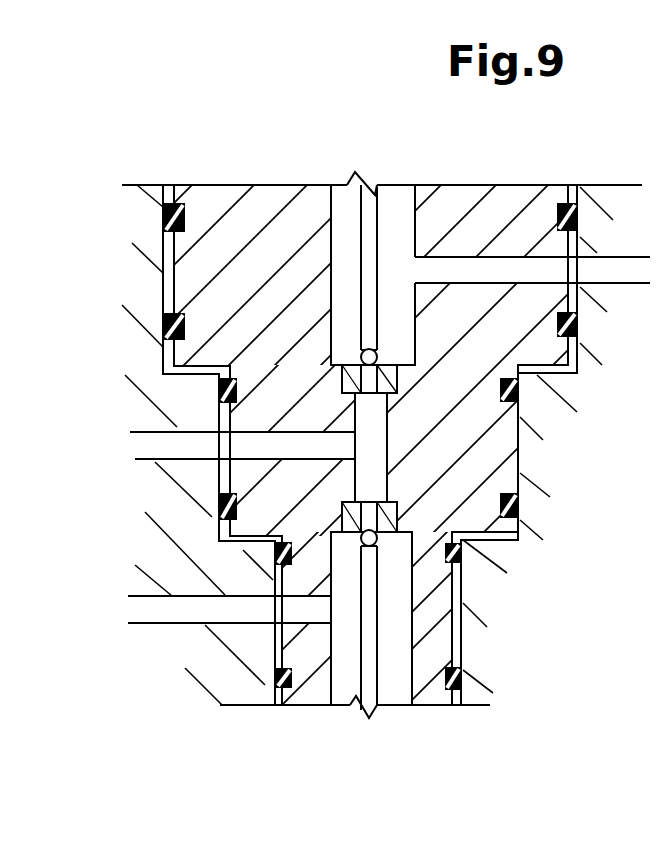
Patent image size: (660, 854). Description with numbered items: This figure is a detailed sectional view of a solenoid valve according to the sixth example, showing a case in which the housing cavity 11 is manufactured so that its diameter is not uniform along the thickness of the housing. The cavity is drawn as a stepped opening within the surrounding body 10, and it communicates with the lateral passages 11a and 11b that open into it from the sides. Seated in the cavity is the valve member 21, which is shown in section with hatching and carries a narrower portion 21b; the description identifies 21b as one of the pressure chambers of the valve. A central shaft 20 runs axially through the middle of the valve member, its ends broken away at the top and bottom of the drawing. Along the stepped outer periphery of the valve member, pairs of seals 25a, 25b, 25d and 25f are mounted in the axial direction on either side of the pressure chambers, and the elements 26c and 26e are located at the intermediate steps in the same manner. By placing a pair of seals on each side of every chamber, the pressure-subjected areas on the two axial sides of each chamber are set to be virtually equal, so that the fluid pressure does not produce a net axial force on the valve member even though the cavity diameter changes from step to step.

The housing body 10 is at (622, 185).
The housing cavity 11 is at (517, 453).
The fluid passage 11a is at (612, 283).
The fluid passage 11b is at (169, 459).
The spindle shaft 20 is at (374, 182).
The rotary valve member 21 is at (508, 185).
The pressure chamber 21b is at (370, 435).
The seal 25a is at (165, 225).
The seal 25b is at (165, 327).
The seal 25d is at (218, 513).
The seal 25f is at (275, 682).
The seal ring 26c is at (218, 393).
The seal ring 26e is at (274, 553).